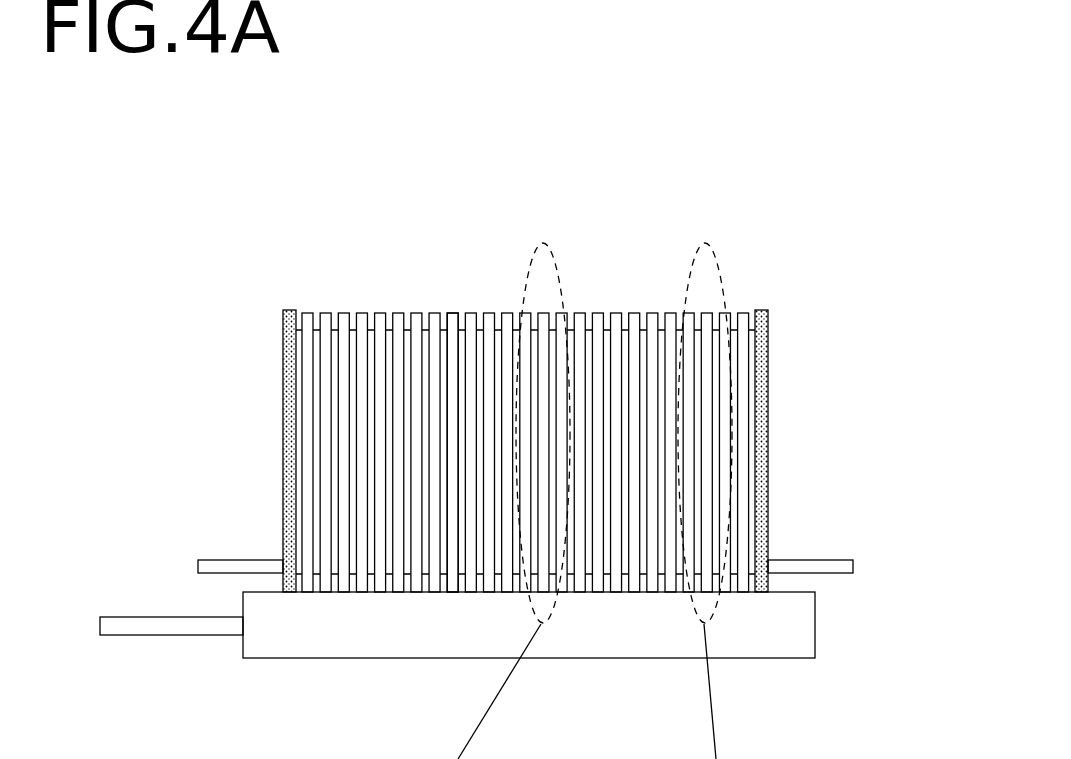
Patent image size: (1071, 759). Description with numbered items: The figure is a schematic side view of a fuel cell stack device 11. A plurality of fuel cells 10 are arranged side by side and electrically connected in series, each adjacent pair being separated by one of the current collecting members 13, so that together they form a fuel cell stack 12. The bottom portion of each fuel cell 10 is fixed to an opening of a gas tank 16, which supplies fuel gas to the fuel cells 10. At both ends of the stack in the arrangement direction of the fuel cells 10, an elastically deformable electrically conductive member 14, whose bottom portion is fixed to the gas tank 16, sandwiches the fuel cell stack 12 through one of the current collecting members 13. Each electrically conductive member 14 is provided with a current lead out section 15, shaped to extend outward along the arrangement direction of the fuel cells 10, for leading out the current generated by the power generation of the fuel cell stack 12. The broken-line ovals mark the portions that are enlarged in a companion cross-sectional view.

The fuel cell 10 is at (613, 318).
The fuel cell stack device 11 is at (313, 156).
The fuel cell stack 12 is at (274, 285).
The current collecting member 13 is at (445, 345).
The electrically conductive member 14 is at (765, 432).
The current lead out section 15 is at (814, 567).
The gas tank 16 is at (815, 635).